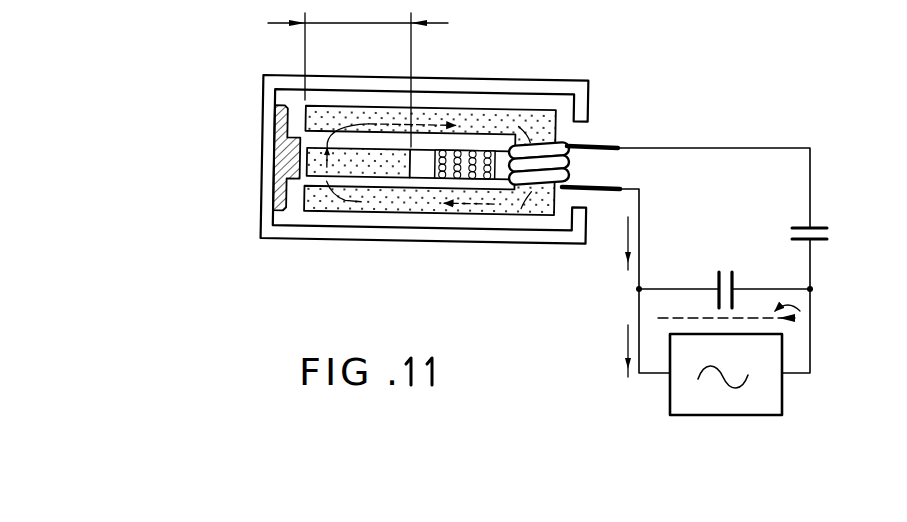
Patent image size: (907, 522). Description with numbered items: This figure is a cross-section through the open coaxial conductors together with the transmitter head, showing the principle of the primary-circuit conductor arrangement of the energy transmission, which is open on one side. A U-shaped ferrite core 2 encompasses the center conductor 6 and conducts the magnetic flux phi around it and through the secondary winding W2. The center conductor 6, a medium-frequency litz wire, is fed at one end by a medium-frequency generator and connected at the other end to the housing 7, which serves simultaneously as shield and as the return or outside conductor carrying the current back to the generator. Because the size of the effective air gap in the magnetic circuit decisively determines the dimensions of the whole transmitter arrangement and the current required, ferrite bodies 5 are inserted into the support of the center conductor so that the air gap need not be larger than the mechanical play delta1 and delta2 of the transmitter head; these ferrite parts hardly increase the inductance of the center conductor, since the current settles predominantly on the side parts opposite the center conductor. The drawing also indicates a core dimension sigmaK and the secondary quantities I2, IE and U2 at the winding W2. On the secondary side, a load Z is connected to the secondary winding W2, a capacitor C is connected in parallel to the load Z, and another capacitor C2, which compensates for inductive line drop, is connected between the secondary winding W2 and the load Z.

The U-shaped ferrite core 2 is at (312, 205).
The ferrite body 5 is at (372, 170).
The center conductor 6 is at (505, 141).
The housing 7 is at (379, 242).
The mechanical play delta1 is at (310, 137).
The mechanical play delta2 is at (310, 178).
The core dimension σK sigmaK is at (358, 73).
The magnetic flux phi is at (383, 115).
The secondary winding W2 is at (576, 165).
The capacitor C is at (712, 280).
The another capacitor C2 is at (792, 247).
The load Z is at (787, 400).
The secondary current I2 is at (617, 252).
The current IE is at (613, 332).
The secondary voltage U2 is at (815, 313).